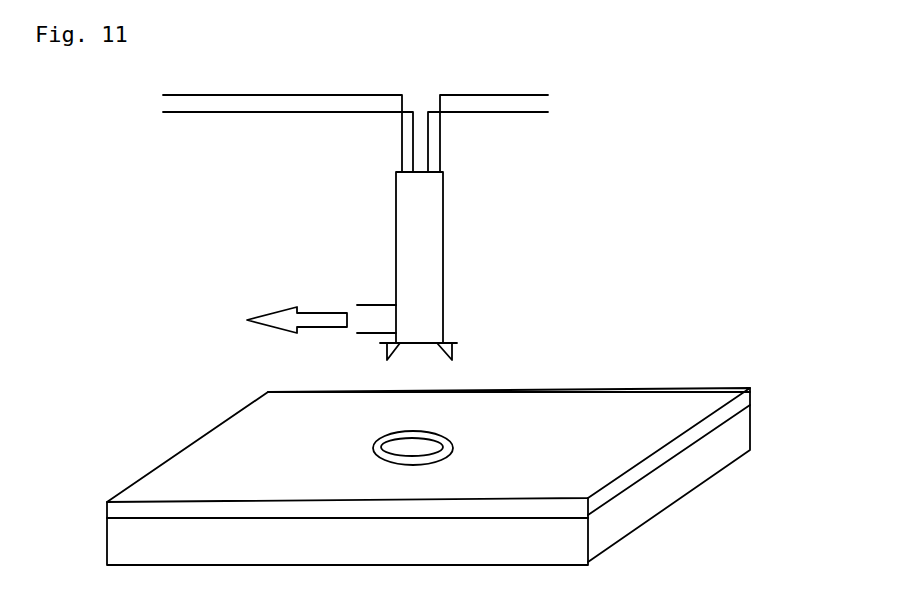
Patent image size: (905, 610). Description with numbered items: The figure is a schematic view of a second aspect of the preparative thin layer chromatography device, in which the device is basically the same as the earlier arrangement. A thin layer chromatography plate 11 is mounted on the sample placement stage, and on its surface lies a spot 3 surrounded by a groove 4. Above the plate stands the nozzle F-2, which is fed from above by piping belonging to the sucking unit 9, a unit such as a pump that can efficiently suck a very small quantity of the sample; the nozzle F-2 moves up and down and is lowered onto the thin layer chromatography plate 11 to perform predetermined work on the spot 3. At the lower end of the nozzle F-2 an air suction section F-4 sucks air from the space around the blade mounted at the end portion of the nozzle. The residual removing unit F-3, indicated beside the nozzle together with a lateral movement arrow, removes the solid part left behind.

The spot 3 is at (380, 440).
The groove 4 is at (402, 446).
The sucking unit 9 is at (500, 102).
The thin layer chromatography plate 11 is at (647, 413).
The nozzle F-2 is at (418, 273).
The residual removing unit F-3 is at (375, 318).
The air suction section F-4 is at (457, 342).